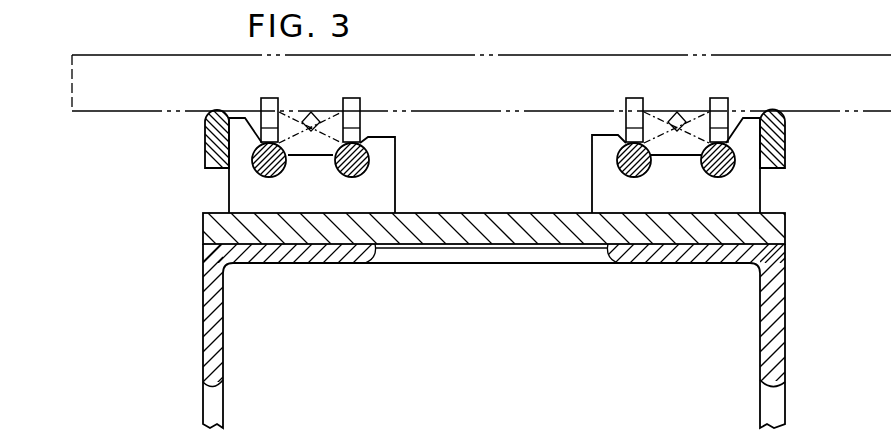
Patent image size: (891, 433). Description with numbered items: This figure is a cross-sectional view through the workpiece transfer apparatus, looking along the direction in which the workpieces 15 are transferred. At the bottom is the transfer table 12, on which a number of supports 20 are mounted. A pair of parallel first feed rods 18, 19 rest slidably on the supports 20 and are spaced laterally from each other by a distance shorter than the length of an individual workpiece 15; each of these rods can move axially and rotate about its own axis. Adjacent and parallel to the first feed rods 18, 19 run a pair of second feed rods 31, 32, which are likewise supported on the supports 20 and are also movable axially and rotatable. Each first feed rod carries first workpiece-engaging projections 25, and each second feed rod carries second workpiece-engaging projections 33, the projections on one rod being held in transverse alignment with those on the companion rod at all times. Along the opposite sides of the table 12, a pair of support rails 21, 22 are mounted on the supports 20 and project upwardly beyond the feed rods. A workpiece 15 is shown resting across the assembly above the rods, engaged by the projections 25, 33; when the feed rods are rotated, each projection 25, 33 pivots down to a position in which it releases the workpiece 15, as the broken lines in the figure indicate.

The workpiece 15 is at (468, 57).
The transfer table 12 is at (490, 213).
The support 20 is at (381, 181).
The support rail 21 is at (208, 128).
The support rail 22 is at (770, 135).
The first workpiece-engaging projection 25 is at (263, 102).
The second workpiece-engaging projection 33 is at (355, 105).
The first feed rod 18 is at (255, 163).
The first feed rod 19 is at (735, 162).
The second feed rod 31 is at (366, 158).
The second feed rod 32 is at (623, 143).